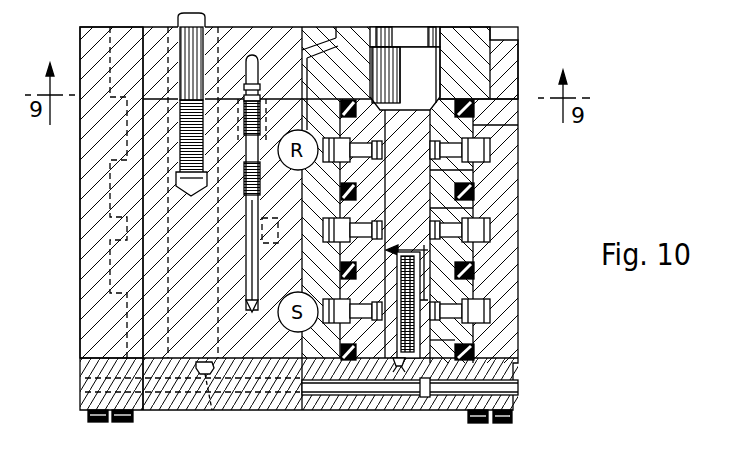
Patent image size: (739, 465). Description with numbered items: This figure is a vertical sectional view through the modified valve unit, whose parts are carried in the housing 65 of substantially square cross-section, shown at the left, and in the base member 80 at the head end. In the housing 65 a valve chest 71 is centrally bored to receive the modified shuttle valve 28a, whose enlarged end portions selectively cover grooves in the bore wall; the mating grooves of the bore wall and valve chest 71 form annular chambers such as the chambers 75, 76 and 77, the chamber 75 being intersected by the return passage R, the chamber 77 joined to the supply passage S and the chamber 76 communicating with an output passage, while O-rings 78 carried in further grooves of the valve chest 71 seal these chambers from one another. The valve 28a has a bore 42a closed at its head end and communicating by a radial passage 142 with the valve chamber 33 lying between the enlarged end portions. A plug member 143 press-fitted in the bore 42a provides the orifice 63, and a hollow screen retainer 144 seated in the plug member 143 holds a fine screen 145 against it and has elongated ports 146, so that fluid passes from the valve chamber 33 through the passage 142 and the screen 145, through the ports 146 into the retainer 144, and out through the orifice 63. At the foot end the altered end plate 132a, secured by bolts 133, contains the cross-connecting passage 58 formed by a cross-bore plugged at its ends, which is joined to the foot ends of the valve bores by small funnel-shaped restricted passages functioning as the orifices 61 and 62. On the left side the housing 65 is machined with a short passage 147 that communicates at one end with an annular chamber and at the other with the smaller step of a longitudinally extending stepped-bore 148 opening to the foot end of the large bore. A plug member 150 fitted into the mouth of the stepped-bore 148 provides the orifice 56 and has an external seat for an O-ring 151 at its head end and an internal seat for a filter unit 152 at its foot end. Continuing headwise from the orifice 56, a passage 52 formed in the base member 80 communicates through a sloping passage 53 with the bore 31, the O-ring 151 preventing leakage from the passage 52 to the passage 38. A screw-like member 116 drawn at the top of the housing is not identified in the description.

The screw 116 is at (184, 20).
The sloping passage 53 is at (253, 52).
The passage 52 is at (255, 86).
The orifice 56 is at (257, 99).
The plug member 150 is at (262, 112).
The O-ring 151 is at (241, 119).
The filter unit 152 is at (246, 181).
The stepped-bore 148 is at (248, 231).
The short passage 147 is at (248, 312).
The passage 38 is at (326, 33).
The bore 31 is at (426, 81).
The base member 80 is at (484, 38).
The housing 65 is at (88, 257).
The modified shuttle valve 28a is at (500, 126).
The annular chamber 75 is at (490, 152).
The valve chest 71 is at (470, 175).
The O-ring 78 is at (470, 194).
The valve chamber 33 is at (470, 210).
The annular chamber 76 is at (490, 229).
The valve bore 42a is at (478, 258).
The radial passage 142 is at (440, 270).
The hollow screen retainer 144 is at (432, 286).
The fine screen 145 is at (452, 300).
The annular chamber 77 is at (490, 311).
The elongated port 146 is at (470, 336).
The plug member 143 is at (478, 351).
The bolt 133 is at (104, 422).
The altered foot end plate 132a is at (153, 410).
The orifice 61 is at (214, 414).
The cross-connecting passage 58 is at (300, 410).
The orifice 63 is at (355, 400).
The orifice 62 is at (400, 396).